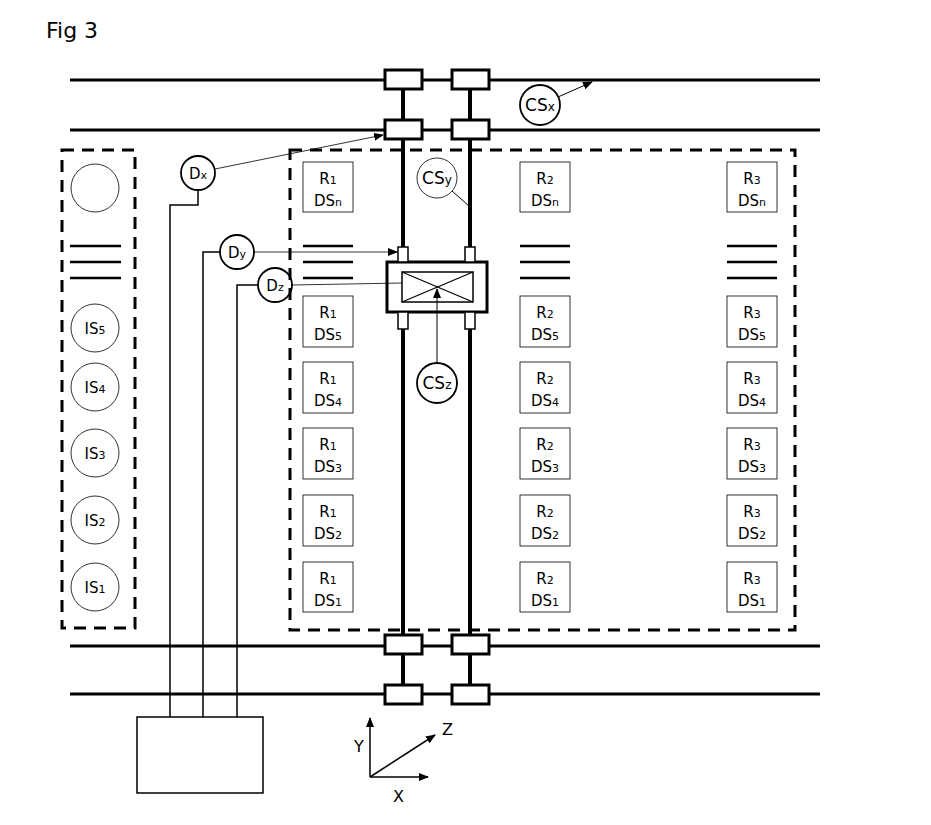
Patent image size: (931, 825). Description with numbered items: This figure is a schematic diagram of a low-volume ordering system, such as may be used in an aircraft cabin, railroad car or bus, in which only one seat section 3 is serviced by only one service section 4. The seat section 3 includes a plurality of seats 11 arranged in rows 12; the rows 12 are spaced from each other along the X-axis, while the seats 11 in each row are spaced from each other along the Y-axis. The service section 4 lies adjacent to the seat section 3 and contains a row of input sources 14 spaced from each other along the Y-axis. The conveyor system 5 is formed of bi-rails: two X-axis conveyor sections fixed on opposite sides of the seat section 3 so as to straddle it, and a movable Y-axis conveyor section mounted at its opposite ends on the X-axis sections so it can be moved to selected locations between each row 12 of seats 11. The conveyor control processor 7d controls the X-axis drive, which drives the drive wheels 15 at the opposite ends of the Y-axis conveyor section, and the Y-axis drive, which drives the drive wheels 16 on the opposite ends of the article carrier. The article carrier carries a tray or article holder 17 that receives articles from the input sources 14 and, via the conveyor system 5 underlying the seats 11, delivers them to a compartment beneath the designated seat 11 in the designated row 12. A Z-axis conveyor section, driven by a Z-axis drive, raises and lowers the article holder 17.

The seat section 3 is at (797, 214).
The service section 4 is at (90, 148).
The conveyor system 5 is at (199, 82).
The conveyor control processor 7d is at (136, 765).
The seat 11 is at (570, 438).
The row 12 is at (572, 178).
The input source 14 is at (118, 172).
The drive wheels 15 is at (383, 126).
The drive wheels 16 is at (398, 248).
The article holder 17 is at (474, 262).